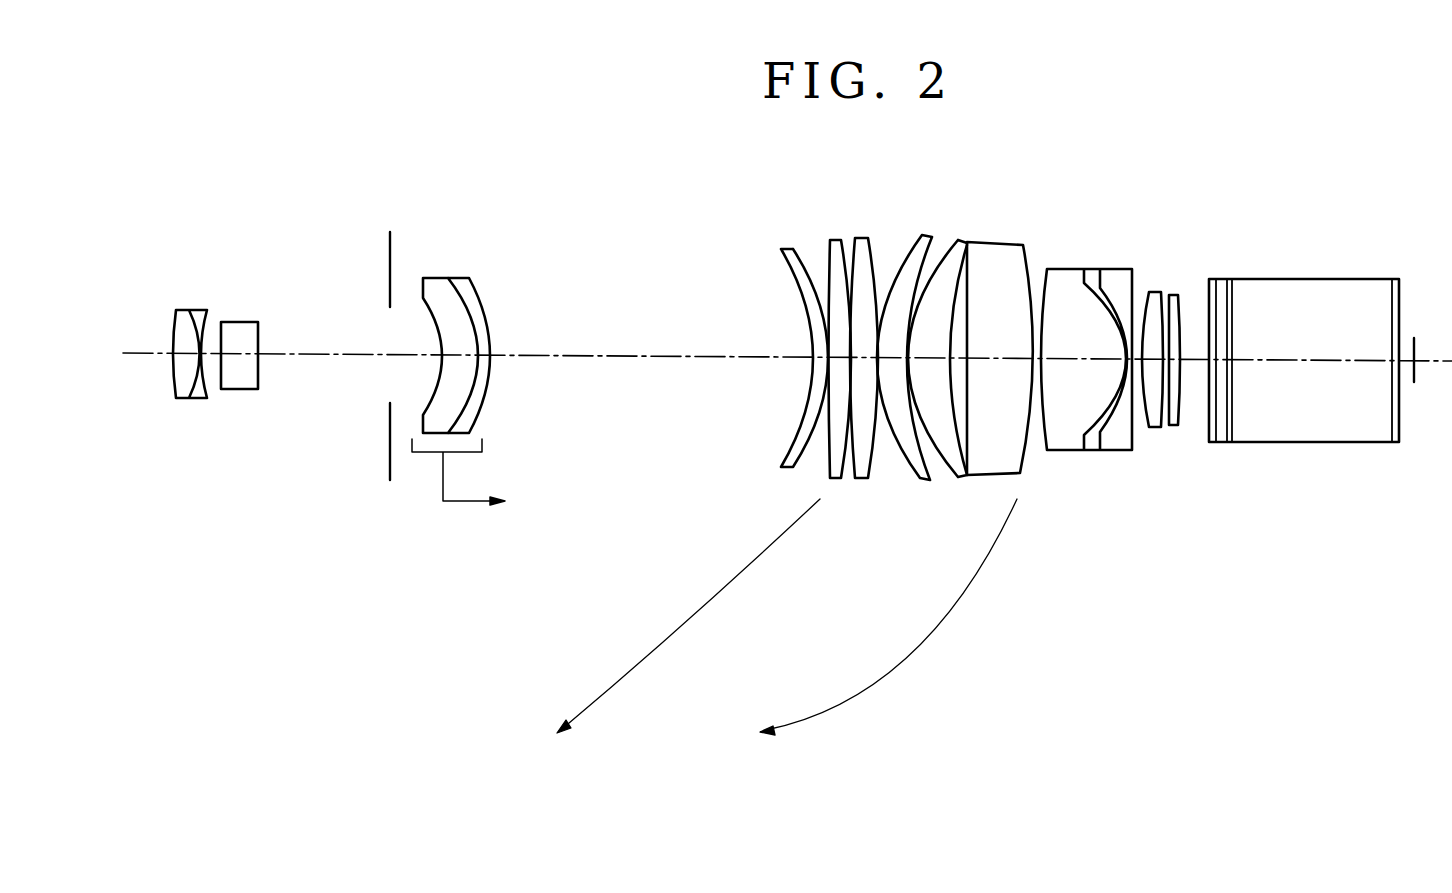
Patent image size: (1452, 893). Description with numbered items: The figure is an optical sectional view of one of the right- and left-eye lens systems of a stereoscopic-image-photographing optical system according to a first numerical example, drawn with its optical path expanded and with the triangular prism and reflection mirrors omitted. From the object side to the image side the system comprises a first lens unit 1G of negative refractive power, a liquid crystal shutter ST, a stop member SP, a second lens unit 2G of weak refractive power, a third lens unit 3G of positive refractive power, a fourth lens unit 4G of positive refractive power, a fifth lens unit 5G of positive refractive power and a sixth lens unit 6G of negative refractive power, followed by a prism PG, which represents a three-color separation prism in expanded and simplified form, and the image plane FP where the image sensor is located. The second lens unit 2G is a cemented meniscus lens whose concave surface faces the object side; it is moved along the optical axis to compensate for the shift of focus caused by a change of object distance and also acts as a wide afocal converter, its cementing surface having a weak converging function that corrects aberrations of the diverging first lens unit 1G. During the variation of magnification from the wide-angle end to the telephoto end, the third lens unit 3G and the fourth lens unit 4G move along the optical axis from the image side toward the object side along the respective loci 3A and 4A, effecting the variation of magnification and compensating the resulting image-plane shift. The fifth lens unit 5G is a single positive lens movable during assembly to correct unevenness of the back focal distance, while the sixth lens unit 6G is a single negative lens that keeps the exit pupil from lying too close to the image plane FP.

The first lens unit 1G is at (189, 398).
The liquid crystal shutter ST is at (238, 322).
The shutter / stop plate SP is at (392, 248).
The second lens unit 2G is at (480, 413).
The third lens unit 3G is at (770, 487).
The locus of the third lens unit 3A is at (688, 616).
The fourth lens unit 4G is at (890, 487).
The locus of the fourth lens unit 4A is at (888, 617).
The fifth lens unit 5G is at (1154, 427).
The sixth lens unit 6G is at (1172, 425).
The prism PG is at (1302, 442).
The image plane FP is at (1414, 382).